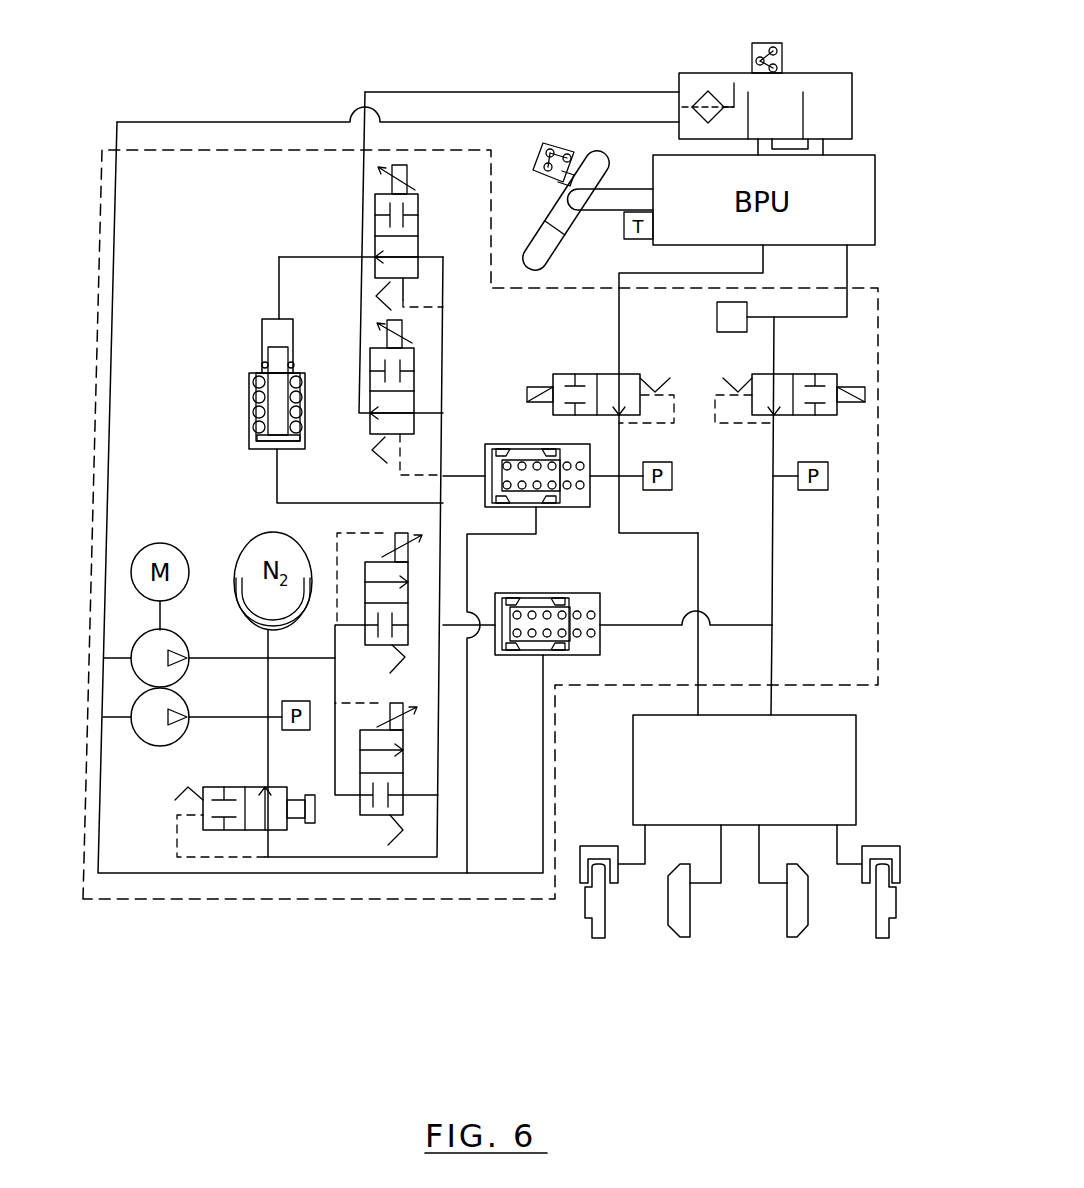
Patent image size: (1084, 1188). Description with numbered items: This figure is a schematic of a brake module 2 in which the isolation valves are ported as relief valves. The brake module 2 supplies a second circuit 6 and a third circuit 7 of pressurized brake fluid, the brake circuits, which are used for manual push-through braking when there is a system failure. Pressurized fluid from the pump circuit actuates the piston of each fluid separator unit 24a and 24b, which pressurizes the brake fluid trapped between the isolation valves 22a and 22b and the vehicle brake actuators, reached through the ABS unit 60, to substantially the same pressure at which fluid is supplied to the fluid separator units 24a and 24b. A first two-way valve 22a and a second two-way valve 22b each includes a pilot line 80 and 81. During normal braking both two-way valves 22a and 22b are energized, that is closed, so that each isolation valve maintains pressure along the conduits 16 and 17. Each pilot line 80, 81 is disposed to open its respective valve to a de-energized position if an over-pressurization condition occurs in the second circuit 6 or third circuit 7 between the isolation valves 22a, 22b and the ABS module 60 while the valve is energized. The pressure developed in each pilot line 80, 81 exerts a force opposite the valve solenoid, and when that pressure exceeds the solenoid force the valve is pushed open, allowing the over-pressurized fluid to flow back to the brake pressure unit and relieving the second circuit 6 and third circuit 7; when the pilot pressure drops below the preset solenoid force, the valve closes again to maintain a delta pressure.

The brake module 2 is at (318, 902).
The second circuit 6 is at (684, 551).
The third circuit 7 is at (783, 611).
The conduit 16 is at (619, 327).
The conduit 17 is at (848, 272).
The first two-way valve 22a is at (570, 374).
The second two-way valve 22b is at (823, 374).
The fluid separator unit 24a is at (507, 443).
The fluid separator unit 24b is at (520, 657).
The ABS unit 60 is at (856, 762).
The pilot line 80 is at (674, 423).
The pilot line 81 is at (727, 427).